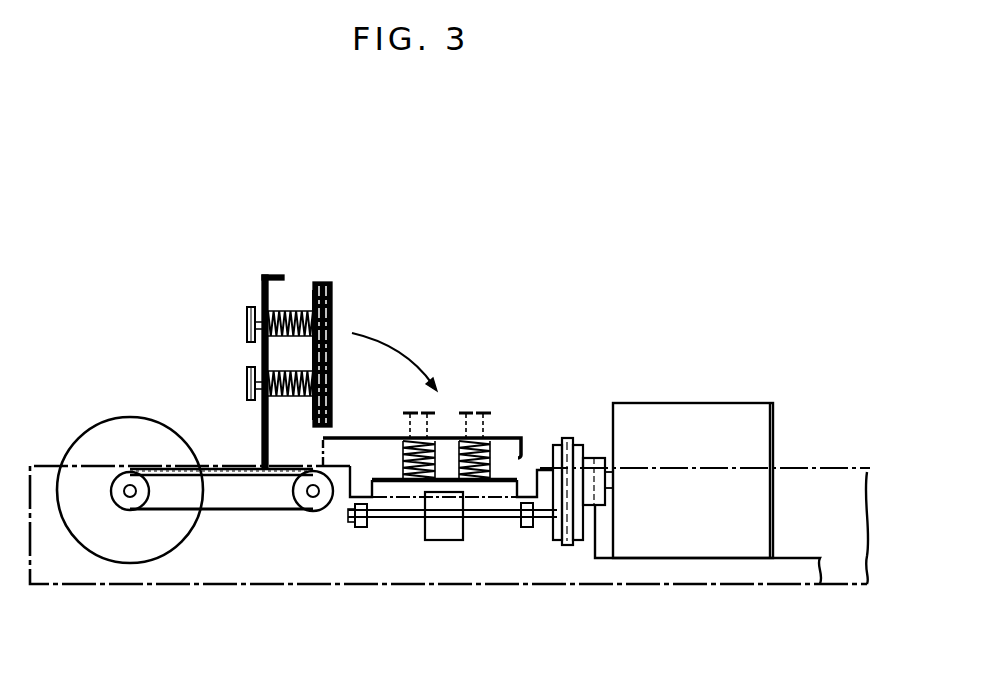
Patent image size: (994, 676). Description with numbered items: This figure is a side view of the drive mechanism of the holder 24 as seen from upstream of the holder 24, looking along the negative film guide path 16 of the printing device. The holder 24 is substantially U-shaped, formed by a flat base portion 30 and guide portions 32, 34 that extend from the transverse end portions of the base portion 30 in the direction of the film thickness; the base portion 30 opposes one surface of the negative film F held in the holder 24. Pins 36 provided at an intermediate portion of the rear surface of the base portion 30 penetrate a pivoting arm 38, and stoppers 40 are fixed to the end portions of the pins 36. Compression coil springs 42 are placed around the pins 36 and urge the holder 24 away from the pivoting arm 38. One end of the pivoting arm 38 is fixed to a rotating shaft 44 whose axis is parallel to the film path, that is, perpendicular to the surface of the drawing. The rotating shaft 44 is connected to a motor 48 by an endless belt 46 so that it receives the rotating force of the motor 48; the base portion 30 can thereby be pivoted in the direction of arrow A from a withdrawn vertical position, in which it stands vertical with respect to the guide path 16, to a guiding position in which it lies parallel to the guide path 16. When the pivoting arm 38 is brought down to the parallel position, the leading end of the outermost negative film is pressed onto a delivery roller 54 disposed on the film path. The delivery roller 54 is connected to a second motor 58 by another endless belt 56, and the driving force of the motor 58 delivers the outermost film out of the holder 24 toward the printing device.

The negative film guide path 16 is at (422, 497).
The holder 24 is at (307, 292).
The base portion 30 is at (331, 349).
The guide portion 32 is at (333, 283).
The guide portion 34 is at (343, 428).
The pins 36 is at (262, 296).
The pivoting arm 38 is at (259, 303).
The stoppers 40 is at (247, 326).
The compression coil springs 42 is at (287, 308).
The rotating shaft 44 is at (314, 511).
The endless belt 46 is at (241, 509).
The motor 48 is at (106, 440).
The delivery roller 54 is at (463, 530).
The endless belt 56 is at (572, 440).
The motor 58 is at (700, 413).
The film F is at (333, 312).
The arrow A is at (388, 343).